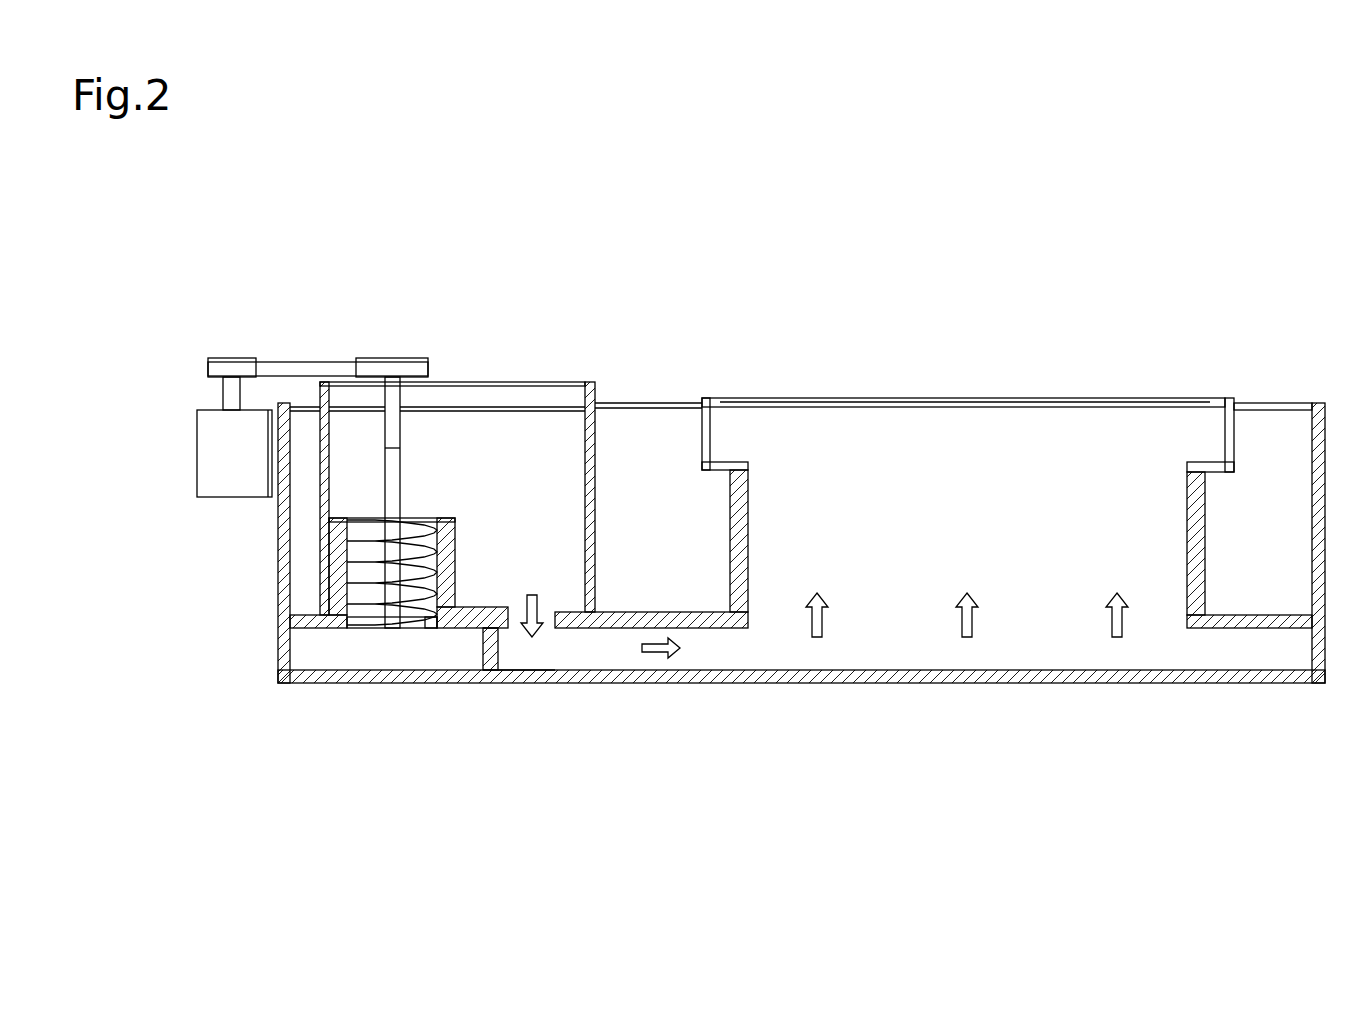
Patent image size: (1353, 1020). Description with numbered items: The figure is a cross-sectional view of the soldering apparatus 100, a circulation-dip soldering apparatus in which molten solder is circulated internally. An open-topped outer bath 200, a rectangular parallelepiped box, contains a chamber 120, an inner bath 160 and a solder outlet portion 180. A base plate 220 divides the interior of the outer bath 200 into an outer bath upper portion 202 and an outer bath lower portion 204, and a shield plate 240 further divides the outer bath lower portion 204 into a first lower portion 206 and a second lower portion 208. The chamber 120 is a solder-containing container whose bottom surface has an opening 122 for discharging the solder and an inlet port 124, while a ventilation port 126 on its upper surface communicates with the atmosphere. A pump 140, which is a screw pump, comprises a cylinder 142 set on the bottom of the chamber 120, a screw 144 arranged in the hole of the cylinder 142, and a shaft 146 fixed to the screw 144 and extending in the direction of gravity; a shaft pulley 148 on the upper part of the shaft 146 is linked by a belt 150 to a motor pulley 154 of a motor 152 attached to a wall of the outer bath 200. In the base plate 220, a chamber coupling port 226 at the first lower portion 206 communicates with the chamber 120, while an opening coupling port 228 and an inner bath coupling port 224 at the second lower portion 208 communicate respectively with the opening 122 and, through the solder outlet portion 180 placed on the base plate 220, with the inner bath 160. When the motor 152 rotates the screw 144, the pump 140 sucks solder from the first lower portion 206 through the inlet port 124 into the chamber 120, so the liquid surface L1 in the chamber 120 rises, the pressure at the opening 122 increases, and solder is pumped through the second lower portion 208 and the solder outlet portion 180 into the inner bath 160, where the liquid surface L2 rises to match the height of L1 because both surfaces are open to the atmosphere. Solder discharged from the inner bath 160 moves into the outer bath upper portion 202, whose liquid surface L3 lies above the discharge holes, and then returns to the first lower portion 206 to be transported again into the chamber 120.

The soldering apparatus 100 is at (1200, 283).
The chamber 120 is at (590, 392).
The opening 122 is at (518, 607).
The inlet port 124 is at (362, 628).
The ventilation port 126 is at (530, 382).
The pump 140 is at (470, 525).
The cylinder 142 is at (452, 518).
The screw 144 is at (412, 518).
The shaft 146 is at (392, 448).
The shaft pulley 148 is at (415, 358).
The belt 150 is at (305, 362).
The motor 152 is at (205, 444).
The motor pulley 154 is at (228, 358).
The inner bath 160 is at (1228, 398).
The solder outlet portion 180 is at (1205, 505).
The outer bath 200 is at (280, 536).
The outer bath upper portion 202 is at (300, 597).
The outer bath lower portion 204 is at (565, 756).
The first lower portion 206 is at (468, 657).
The second lower portion 208 is at (512, 655).
The base plate 220 is at (627, 628).
The inner bath coupling port 224 is at (1184, 622).
The chamber coupling port 226 is at (432, 626).
The opening coupling port 228 is at (550, 628).
The shield plate 240 is at (483, 637).
The liquid surface L1 is at (462, 407).
The liquid surface L2 is at (866, 398).
The liquid surface L3 is at (660, 403).